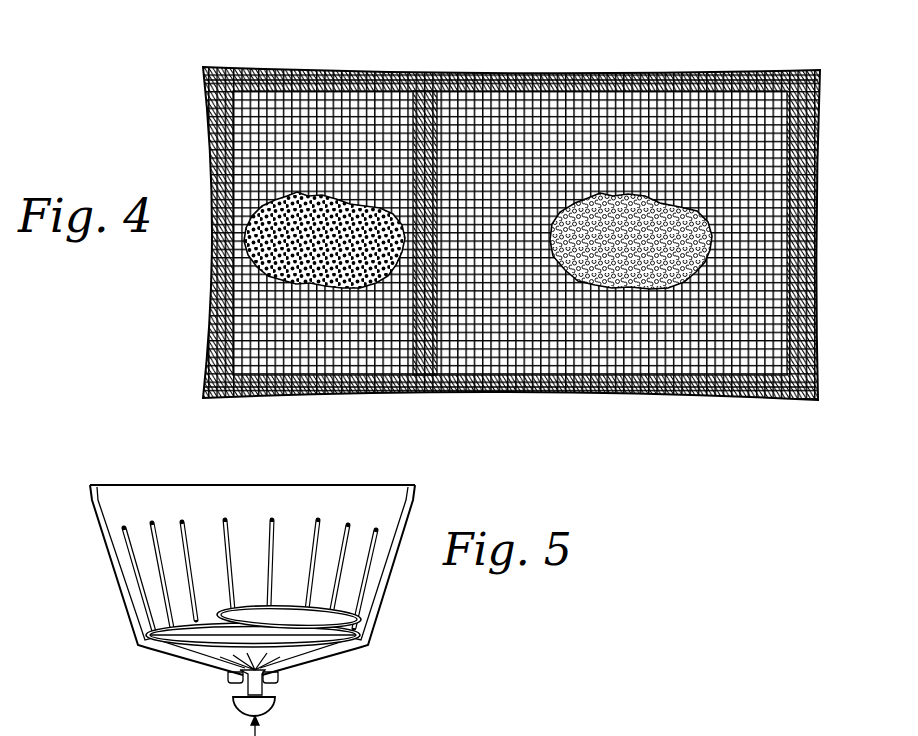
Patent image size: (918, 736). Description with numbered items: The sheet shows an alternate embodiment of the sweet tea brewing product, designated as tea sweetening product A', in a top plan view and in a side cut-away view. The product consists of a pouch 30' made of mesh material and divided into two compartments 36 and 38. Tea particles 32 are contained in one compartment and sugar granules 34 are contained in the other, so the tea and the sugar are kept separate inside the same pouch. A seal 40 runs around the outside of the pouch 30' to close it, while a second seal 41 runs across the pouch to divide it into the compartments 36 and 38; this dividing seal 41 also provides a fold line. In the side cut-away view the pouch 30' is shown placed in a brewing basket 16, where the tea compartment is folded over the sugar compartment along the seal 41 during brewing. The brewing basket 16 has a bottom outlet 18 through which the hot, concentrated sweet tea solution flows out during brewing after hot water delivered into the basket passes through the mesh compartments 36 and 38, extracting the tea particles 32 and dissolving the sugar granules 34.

In FIG. 4, the pouch 30' is at (511, 242).
In FIG. 4, the tea particles 32 is at (307, 193).
In FIG. 4, the sugar granules 34 is at (632, 193).
In FIG. 4, the compartment 36 is at (270, 325).
In FIG. 5, the compartment 36 is at (290, 615).
In FIG. 4, the compartment 38 is at (755, 312).
In FIG. 5, the compartment 38 is at (174, 575).
In FIG. 4, the seal 40 is at (810, 185).
In FIG. 4, the seal 41 is at (427, 120).
In FIG. 4, the tea sweetening product A' is at (553, 45).
In FIG. 5, the brewing basket 16 is at (113, 570).
In FIG. 5, the bottom outlet 18 is at (280, 692).